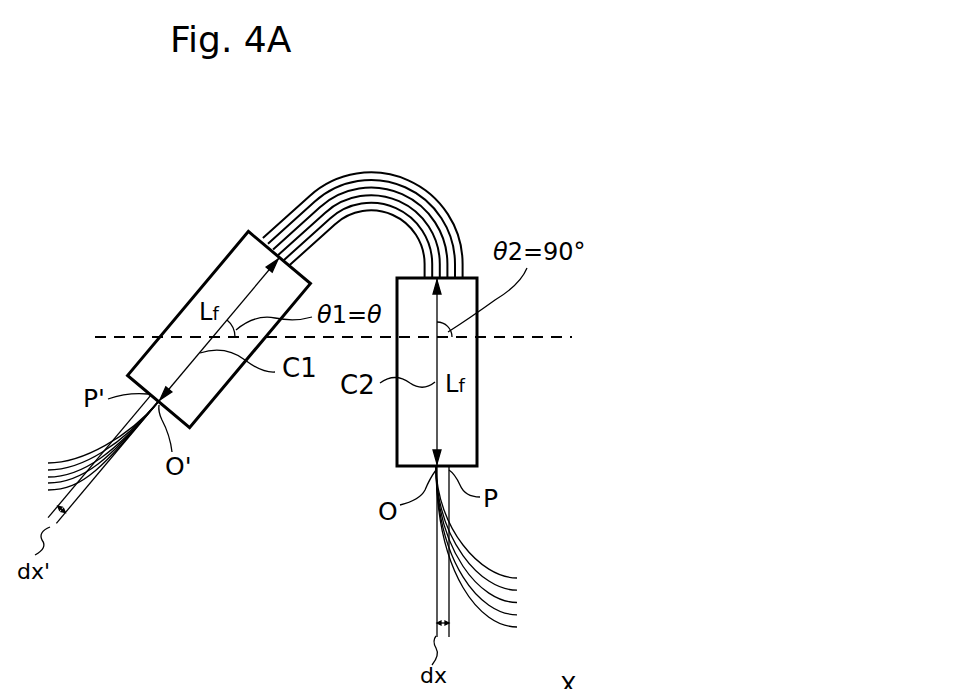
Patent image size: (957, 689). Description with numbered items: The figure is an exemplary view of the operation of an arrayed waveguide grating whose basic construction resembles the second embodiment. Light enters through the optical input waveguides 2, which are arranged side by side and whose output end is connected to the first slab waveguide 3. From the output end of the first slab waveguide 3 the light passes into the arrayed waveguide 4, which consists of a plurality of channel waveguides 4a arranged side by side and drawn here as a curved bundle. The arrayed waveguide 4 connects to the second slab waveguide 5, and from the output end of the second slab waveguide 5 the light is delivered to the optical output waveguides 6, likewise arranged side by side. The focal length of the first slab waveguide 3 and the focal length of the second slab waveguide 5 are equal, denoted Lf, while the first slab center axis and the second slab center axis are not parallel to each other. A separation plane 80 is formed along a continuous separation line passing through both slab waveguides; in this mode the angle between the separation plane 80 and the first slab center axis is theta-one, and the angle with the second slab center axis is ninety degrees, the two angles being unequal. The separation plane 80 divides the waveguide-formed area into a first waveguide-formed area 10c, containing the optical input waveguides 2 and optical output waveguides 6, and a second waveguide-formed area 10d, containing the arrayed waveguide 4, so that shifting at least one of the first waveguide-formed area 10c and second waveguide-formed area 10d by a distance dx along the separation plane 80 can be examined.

The optical input waveguides 2 is at (77, 460).
The first slab waveguide 3 is at (200, 384).
The arrayed waveguide 4 is at (350, 232).
The channel waveguides 4a is at (423, 178).
The second slab waveguide 5 is at (403, 432).
The optical output waveguides 6 is at (478, 570).
The first waveguide-formed area 10c is at (537, 465).
The second waveguide-formed area 10d is at (565, 200).
The separation plane 80 is at (527, 337).